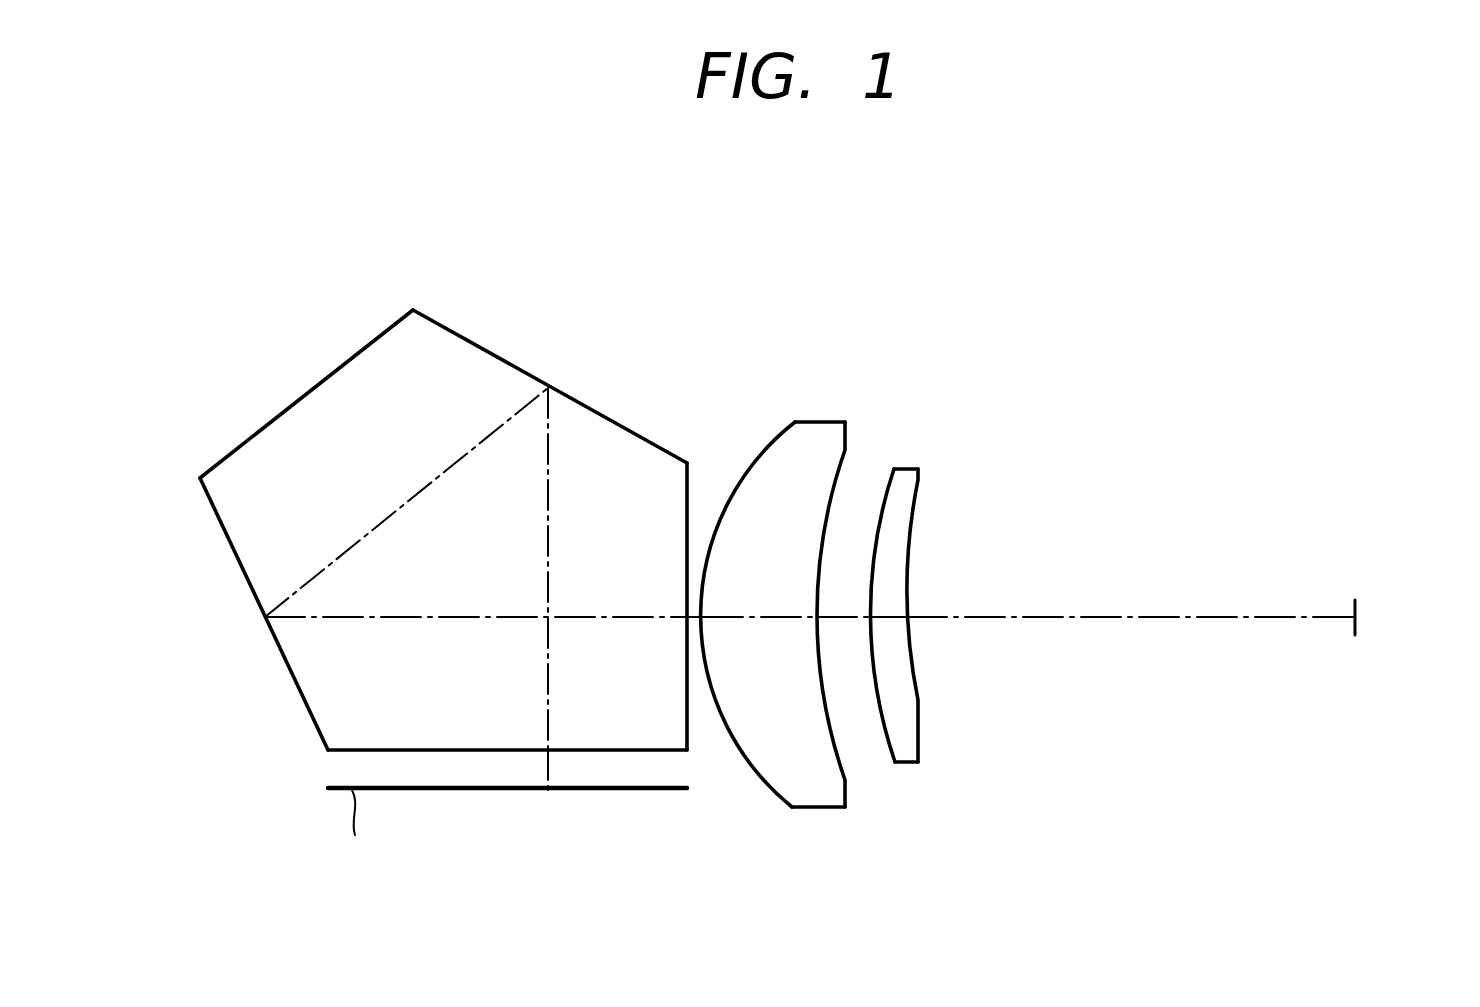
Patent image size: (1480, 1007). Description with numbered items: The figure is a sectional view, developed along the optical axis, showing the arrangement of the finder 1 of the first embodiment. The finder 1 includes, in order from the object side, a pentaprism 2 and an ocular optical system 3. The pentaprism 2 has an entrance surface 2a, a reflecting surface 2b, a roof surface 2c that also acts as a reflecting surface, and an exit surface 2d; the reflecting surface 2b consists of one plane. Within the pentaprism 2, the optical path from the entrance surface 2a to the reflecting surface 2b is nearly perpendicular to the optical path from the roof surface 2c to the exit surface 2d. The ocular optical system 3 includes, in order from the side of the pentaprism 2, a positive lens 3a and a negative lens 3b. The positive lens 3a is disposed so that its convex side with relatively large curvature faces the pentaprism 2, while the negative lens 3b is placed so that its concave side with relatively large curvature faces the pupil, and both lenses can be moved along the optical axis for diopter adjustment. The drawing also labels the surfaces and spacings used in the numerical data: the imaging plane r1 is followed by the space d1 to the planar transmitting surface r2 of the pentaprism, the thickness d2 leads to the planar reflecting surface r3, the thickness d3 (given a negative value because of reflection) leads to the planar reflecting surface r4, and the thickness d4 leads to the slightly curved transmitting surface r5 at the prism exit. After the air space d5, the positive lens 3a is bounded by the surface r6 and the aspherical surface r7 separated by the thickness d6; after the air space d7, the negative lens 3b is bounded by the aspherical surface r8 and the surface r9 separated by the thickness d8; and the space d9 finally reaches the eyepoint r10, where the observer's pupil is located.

The finder 1 is at (995, 225).
The pentaprism 2 is at (332, 410).
The entrance surface 2a is at (352, 750).
The reflecting surface 2b is at (477, 346).
The roof surface 2c is at (229, 540).
The exit surface 2d is at (690, 620).
The ocular optical system 3 is at (947, 860).
The positive lens 3a is at (808, 447).
The negative lens 3b is at (912, 516).
The imaging plane r1 is at (617, 788).
The transmitting surface r2 is at (595, 750).
The reflecting surface r3 is at (592, 411).
The reflecting surface r4 is at (250, 588).
The transmitting surface r5 is at (690, 503).
The lens surface r6 is at (752, 447).
The aspherical surface r7 is at (840, 487).
The aspherical surface r8 is at (873, 510).
The lens surface r9 is at (910, 587).
The eyepoint r10 is at (1355, 605).
The space d1 is at (548, 770).
The thickness d2 is at (553, 525).
The thickness d3 is at (400, 508).
The thickness d4 is at (472, 620).
The space d5 is at (694, 617).
The thickness d6 is at (762, 617).
The space d7 is at (845, 617).
The thickness d8 is at (887, 617).
The space d9 is at (1130, 617).